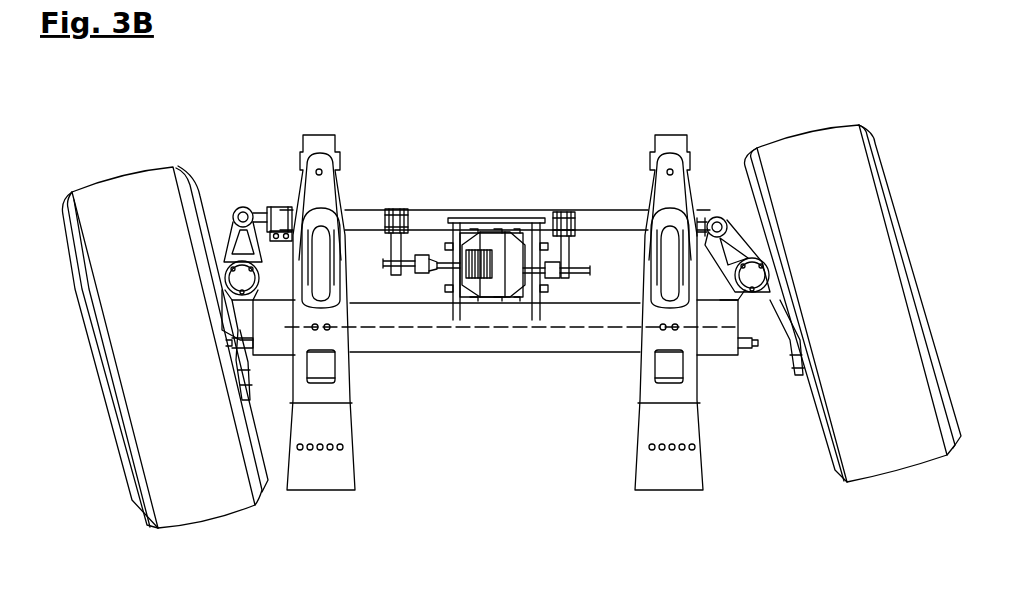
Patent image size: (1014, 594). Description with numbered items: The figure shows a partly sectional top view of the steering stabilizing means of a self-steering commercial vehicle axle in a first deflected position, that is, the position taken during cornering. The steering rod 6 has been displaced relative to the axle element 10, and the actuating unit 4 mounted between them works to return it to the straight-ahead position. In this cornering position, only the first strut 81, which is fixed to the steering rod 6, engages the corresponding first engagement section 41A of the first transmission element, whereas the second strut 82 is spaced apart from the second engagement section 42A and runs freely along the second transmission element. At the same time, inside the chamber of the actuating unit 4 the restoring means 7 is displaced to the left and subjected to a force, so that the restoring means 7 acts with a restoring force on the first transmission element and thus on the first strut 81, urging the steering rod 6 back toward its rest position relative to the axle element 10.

The axle element 10 is at (611, 340).
The steering rod 6 is at (588, 217).
The restoring means 7 is at (496, 257).
The actuating unit 4 is at (496, 305).
The second engagement section 42A is at (418, 272).
The first engagement section 41A is at (553, 278).
The second strut 82 is at (392, 248).
The first strut 81 is at (565, 250).